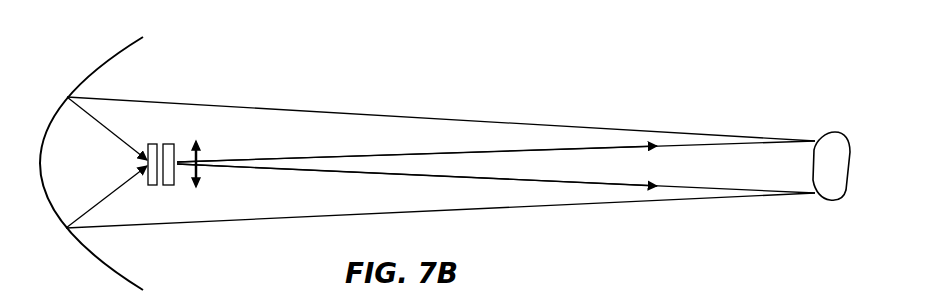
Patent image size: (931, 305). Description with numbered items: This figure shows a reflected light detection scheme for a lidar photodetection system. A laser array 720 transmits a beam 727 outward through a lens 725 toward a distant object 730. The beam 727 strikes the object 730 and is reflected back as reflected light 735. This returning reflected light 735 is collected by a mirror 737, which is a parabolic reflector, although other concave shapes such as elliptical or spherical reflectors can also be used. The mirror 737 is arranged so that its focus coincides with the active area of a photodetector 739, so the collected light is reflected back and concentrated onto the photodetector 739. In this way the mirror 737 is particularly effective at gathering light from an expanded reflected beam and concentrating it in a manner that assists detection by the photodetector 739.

The mirror 737 is at (80, 75).
The photodetector 739 is at (152, 143).
The laser array 720 is at (170, 186).
The lens 725 is at (197, 140).
The reflected light 735 is at (428, 118).
The beam 727 is at (690, 143).
The object 730 is at (830, 133).